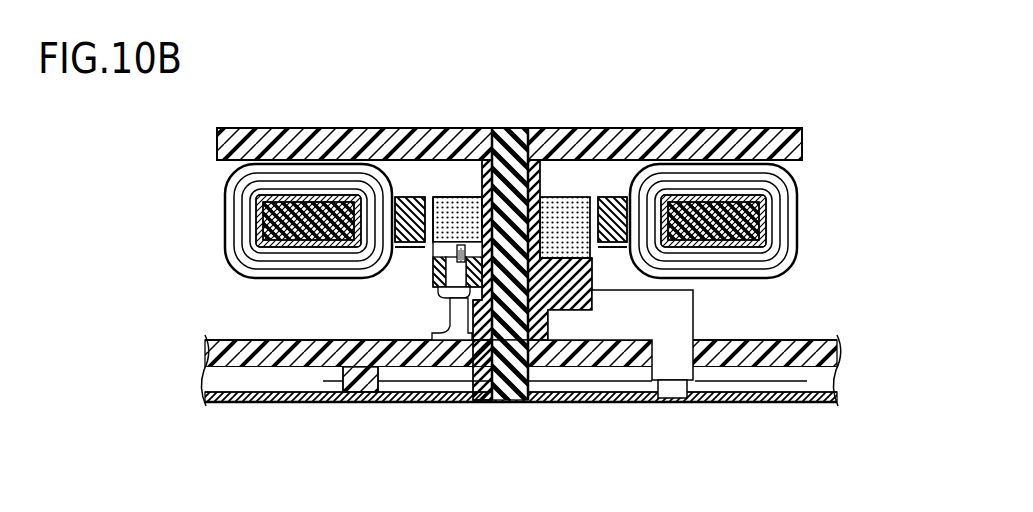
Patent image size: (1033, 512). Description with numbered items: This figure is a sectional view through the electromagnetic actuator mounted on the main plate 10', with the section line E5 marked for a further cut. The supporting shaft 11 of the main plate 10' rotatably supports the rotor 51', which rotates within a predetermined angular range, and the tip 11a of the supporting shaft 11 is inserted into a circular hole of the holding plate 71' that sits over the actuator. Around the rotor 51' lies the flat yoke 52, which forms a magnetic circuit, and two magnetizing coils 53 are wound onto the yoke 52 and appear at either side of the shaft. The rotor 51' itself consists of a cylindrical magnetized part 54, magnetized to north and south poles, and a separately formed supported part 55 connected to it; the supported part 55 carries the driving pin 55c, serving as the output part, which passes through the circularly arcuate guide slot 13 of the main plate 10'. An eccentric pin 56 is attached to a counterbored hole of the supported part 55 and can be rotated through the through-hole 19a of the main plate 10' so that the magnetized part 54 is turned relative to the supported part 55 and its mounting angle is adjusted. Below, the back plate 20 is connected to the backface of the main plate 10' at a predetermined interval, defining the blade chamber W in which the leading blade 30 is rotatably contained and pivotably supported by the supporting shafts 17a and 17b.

The supporting shaft 11 is at (578, 152).
The tip of the supporting shaft 11a is at (517, 175).
The holding plate 71' is at (728, 96).
The magnetizing coil 53 is at (228, 190).
The yoke 52 is at (262, 236).
The rotor 51' is at (470, 160).
The magnetized part 54 is at (463, 203).
The supported part 55 is at (480, 170).
The driving pin 55c is at (686, 398).
The eccentric pin 56 is at (451, 300).
The through-hole 19a is at (436, 334).
The guide slot 13 is at (703, 347).
The supporting shaft 17a is at (522, 403).
The supporting shaft 17b is at (355, 402).
The main plate 10' is at (532, 321).
The blade chamber W is at (265, 375).
The leading blade 30 is at (733, 398).
The back plate 20 is at (808, 404).
The section line E5 is at (618, 266).